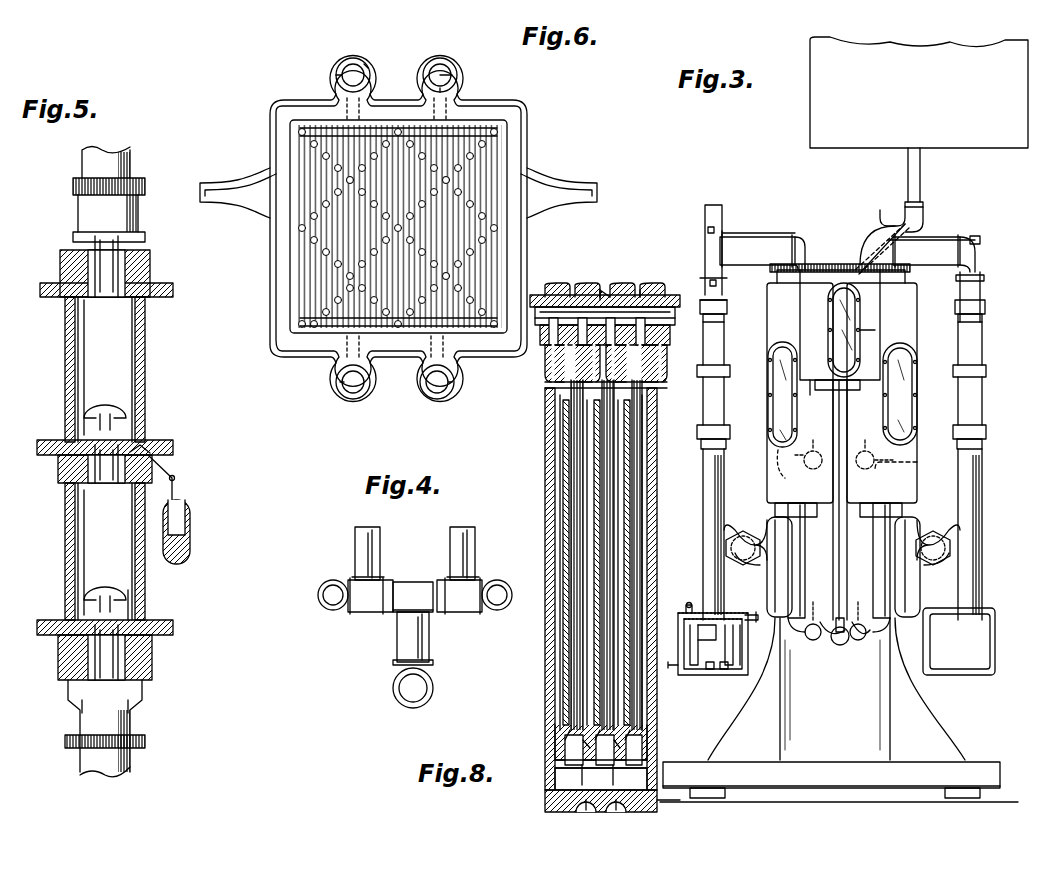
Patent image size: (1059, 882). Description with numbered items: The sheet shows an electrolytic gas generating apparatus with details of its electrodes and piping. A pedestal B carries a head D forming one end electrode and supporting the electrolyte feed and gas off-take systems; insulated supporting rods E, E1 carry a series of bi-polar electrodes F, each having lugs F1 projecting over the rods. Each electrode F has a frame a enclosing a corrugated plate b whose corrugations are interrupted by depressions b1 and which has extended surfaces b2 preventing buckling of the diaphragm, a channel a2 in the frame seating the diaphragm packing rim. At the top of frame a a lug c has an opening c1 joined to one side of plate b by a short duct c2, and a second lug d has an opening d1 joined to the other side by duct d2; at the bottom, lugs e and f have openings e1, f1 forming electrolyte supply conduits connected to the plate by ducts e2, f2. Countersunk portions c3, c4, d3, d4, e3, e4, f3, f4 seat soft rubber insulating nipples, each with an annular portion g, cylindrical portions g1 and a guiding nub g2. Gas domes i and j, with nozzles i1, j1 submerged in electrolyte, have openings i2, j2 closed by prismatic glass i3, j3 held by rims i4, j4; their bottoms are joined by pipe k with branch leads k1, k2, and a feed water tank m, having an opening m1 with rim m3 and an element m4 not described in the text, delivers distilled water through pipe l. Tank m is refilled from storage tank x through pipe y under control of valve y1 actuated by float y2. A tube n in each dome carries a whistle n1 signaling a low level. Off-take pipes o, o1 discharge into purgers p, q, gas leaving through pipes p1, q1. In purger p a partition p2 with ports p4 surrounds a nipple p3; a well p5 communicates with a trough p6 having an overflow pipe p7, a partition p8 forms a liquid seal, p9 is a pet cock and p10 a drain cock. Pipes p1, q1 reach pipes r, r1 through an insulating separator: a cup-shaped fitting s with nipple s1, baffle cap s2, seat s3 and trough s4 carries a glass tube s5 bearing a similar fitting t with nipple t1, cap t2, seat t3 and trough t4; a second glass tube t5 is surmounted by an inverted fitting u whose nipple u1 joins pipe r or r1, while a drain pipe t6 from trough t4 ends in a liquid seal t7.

In FIG. 3, the storage tank x is at (919, 92).
In FIG. 3, the offtake pipe y is at (922, 172).
In FIG. 3, the automatic valve y1 is at (926, 214).
In FIG. 3, the float y2 is at (846, 262).
In FIG. 3, the tube n is at (790, 232).
In FIG. 3, the whistle n1 is at (708, 232).
In FIG. 3, the gas offtake pipe o is at (760, 240).
In FIG. 3, the gas offtake pipe o1 is at (955, 248).
In FIG. 5, the pipe r is at (132, 162).
In FIG. 3, the pipe r1 is at (985, 282).
In FIG. 5, the inverted fitting u is at (152, 262).
In FIG. 3, the inverted fitting u is at (987, 306).
In FIG. 5, the nipple u1 is at (96, 255).
In FIG. 5, the fitting t is at (58, 470).
In FIG. 3, the fitting t is at (988, 372).
In FIG. 5, the nipple t1 is at (126, 483).
In FIG. 5, the baffle cap t2 is at (98, 412).
In FIG. 5, the annular seat t3 is at (148, 452).
In FIG. 5, the trough t4 is at (66, 444).
In FIG. 5, the second glass tube t5 is at (146, 360).
In FIG. 3, the second glass tube t5 is at (985, 340).
In FIG. 5, the drain pipe t6 is at (174, 476).
In FIG. 5, the liquid seal t7 is at (191, 534).
In FIG. 5, the cup-shaped fitting s is at (58, 662).
In FIG. 3, the cup-shaped fitting s is at (988, 434).
In FIG. 5, the nipple s1 is at (126, 672).
In FIG. 5, the baffle cap s2 is at (96, 597).
In FIG. 5, the seat s3 is at (50, 634).
In FIG. 5, the trough s4 is at (130, 620).
In FIG. 5, the glass tube s5 is at (66, 540).
In FIG. 3, the glass tube s5 is at (985, 400).
In FIG. 3, the purger p is at (678, 625).
In FIG. 5, the gas pipe p1 is at (124, 760).
In FIG. 3, the gas pipe p1 is at (703, 510).
In FIG. 3, the partition p2 is at (690, 650).
In FIG. 3, the nipple p3 is at (709, 641).
In FIG. 3, the ports p4 is at (710, 669).
In FIG. 3, the well p5 is at (745, 660).
In FIG. 3, the trough p6 is at (750, 614).
In FIG. 3, the overflow pipe p7 is at (760, 612).
In FIG. 3, the partition p8 is at (740, 668).
In FIG. 3, the pet cock p9 is at (690, 597).
In FIG. 3, the drain cock p10 is at (670, 668).
In FIG. 3, the purger q is at (990, 634).
In FIG. 3, the gas pipe q1 is at (985, 490).
In FIG. 3, the gas dome i is at (775, 312).
In FIG. 3, the nozzle i1 is at (778, 450).
In FIG. 3, the opening i2 is at (772, 398).
In FIG. 3, the prismatic glass plate i3 is at (784, 478).
In FIG. 3, the metallic rim i4 is at (772, 432).
In FIG. 3, the gas dome j is at (905, 312).
In FIG. 3, the nozzle j1 is at (918, 462).
In FIG. 3, the opening j2 is at (918, 364).
In FIG. 3, the prismatic glass plate j3 is at (912, 440).
In FIG. 3, the metallic rim j4 is at (918, 400).
In FIG. 3, the feed water tank m is at (826, 330).
In FIG. 3, the opening m1 is at (862, 338).
In FIG. 3, the metallic rim m3 is at (816, 373).
In FIG. 3, the flange m4 is at (772, 348).
In FIG. 3, the head D is at (777, 528).
In FIG. 3, the supporting rod E is at (730, 550).
In FIG. 3, the supporting rod E1 is at (948, 550).
In FIG. 6, the bi-polar electrode F is at (520, 258).
In FIG. 6, the lugs F1 is at (238, 192).
In FIG. 3, the lugs F1 is at (728, 538).
In FIG. 4, the pipe k is at (332, 611).
In FIG. 3, the pipe k is at (790, 578).
In FIG. 4, the branch lead k1 is at (362, 550).
In FIG. 3, the branch lead k1 is at (805, 640).
In FIG. 4, the branch lead k2 is at (470, 548).
In FIG. 3, the branch lead k2 is at (858, 640).
In FIG. 4, the pipe l is at (435, 688).
In FIG. 3, the pipe l is at (845, 580).
In FIG. 3, the pedestal B is at (839, 710).
In FIG. 6, the frame a is at (522, 110).
In FIG. 8, the frame a is at (548, 398).
In FIG. 8, the channel a2 is at (555, 722).
In FIG. 6, the corrugated plate b is at (300, 285).
In FIG. 8, the corrugated plate b is at (645, 418).
In FIG. 6, the depressions b1 is at (488, 300).
In FIG. 8, the depressions b1 is at (655, 440).
In FIG. 6, the extended surfaces b2 is at (340, 168).
In FIG. 6, the lug c is at (364, 64).
In FIG. 8, the lug c is at (582, 288).
In FIG. 6, the opening c1 is at (336, 74).
In FIG. 8, the opening c1 is at (556, 350).
In FIG. 3, the opening c1 is at (810, 530).
In FIG. 6, the short duct c2 is at (372, 66).
In FIG. 8, the short duct c2 is at (560, 380).
In FIG. 8, the countersunk portion c3 is at (552, 288).
In FIG. 6, the countersunk portion c4 is at (353, 58).
In FIG. 8, the countersunk portion c4 is at (604, 290).
In FIG. 6, the second lug d is at (451, 64).
In FIG. 8, the second lug d is at (626, 290).
In FIG. 6, the opening d1 is at (453, 76).
In FIG. 3, the opening d1 is at (875, 445).
In FIG. 6, the duct d2 is at (444, 82).
In FIG. 8, the duct d2 is at (668, 347).
In FIG. 8, the countersunk portion d3 is at (642, 290).
In FIG. 6, the countersunk portion d4 is at (440, 58).
In FIG. 8, the countersunk portion d4 is at (660, 292).
In FIG. 8, the lug e is at (545, 814).
In FIG. 6, the opening e1 is at (355, 390).
In FIG. 8, the opening e1 is at (558, 778).
In FIG. 6, the duct e2 is at (350, 392).
In FIG. 8, the duct e2 is at (555, 746).
In FIG. 8, the countersunk portion e3 is at (548, 802).
In FIG. 6, the countersunk portion e4 is at (336, 370).
In FIG. 8, the countersunk portion e4 is at (586, 814).
In FIG. 8, the lug f is at (618, 814).
In FIG. 6, the opening f1 is at (437, 392).
In FIG. 8, the opening f1 is at (640, 772).
In FIG. 3, the opening f1 is at (858, 610).
In FIG. 6, the duct f2 is at (452, 365).
In FIG. 8, the duct f2 is at (640, 735).
In FIG. 8, the countersunk portion f3 is at (640, 752).
In FIG. 6, the countersunk portion f4 is at (450, 373).
In FIG. 8, the countersunk portion f4 is at (672, 802).
In FIG. 8, the annular central portion g is at (672, 298).
In FIG. 8, the cylindrical portion g1 is at (676, 314).
In FIG. 8, the nub g2 is at (606, 290).